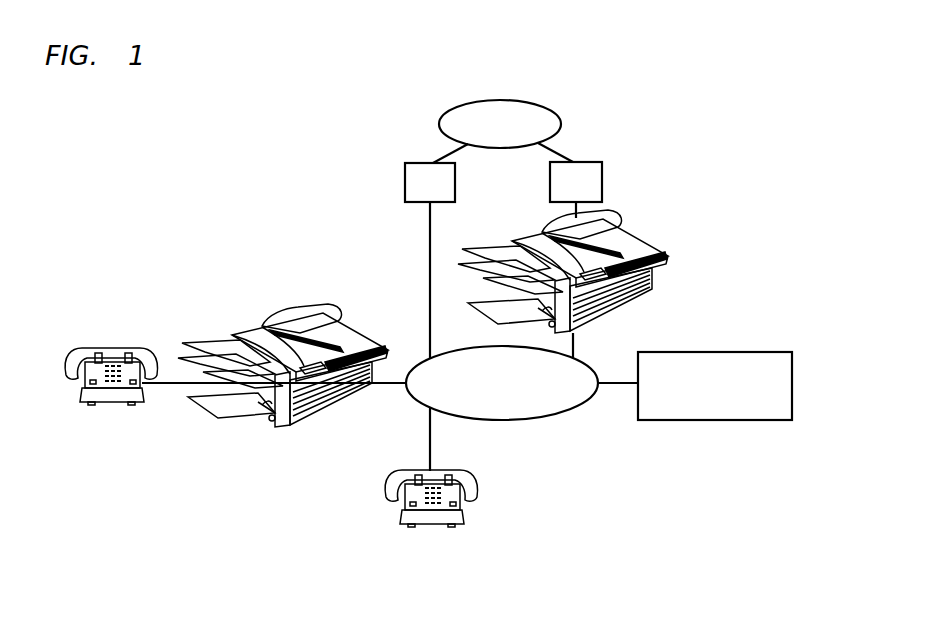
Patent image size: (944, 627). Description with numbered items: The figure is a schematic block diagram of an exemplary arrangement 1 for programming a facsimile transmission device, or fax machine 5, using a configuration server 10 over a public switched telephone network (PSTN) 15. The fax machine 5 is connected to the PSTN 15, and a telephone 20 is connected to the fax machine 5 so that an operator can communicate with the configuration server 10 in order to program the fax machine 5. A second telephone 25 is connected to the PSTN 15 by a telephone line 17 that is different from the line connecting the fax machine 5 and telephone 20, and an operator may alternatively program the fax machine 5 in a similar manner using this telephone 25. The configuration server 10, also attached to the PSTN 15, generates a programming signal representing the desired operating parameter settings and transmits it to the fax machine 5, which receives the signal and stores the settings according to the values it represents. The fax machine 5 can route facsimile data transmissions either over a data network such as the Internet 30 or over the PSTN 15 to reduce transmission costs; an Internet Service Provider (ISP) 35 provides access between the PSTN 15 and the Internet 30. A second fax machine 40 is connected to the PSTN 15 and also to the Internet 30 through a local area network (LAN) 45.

The arrangement 1 is at (254, 202).
The facsimile transmission device 5 is at (352, 328).
The configuration server 10 is at (792, 357).
The public switched telephone network 15 is at (583, 358).
The telephone line 17 is at (430, 428).
The telephone 20 is at (82, 397).
The telephone 25 is at (402, 518).
The Internet 30 is at (556, 112).
The Internet Service Provider 35 is at (405, 203).
The second fax machine 40 is at (632, 233).
The local area network 45 is at (602, 167).